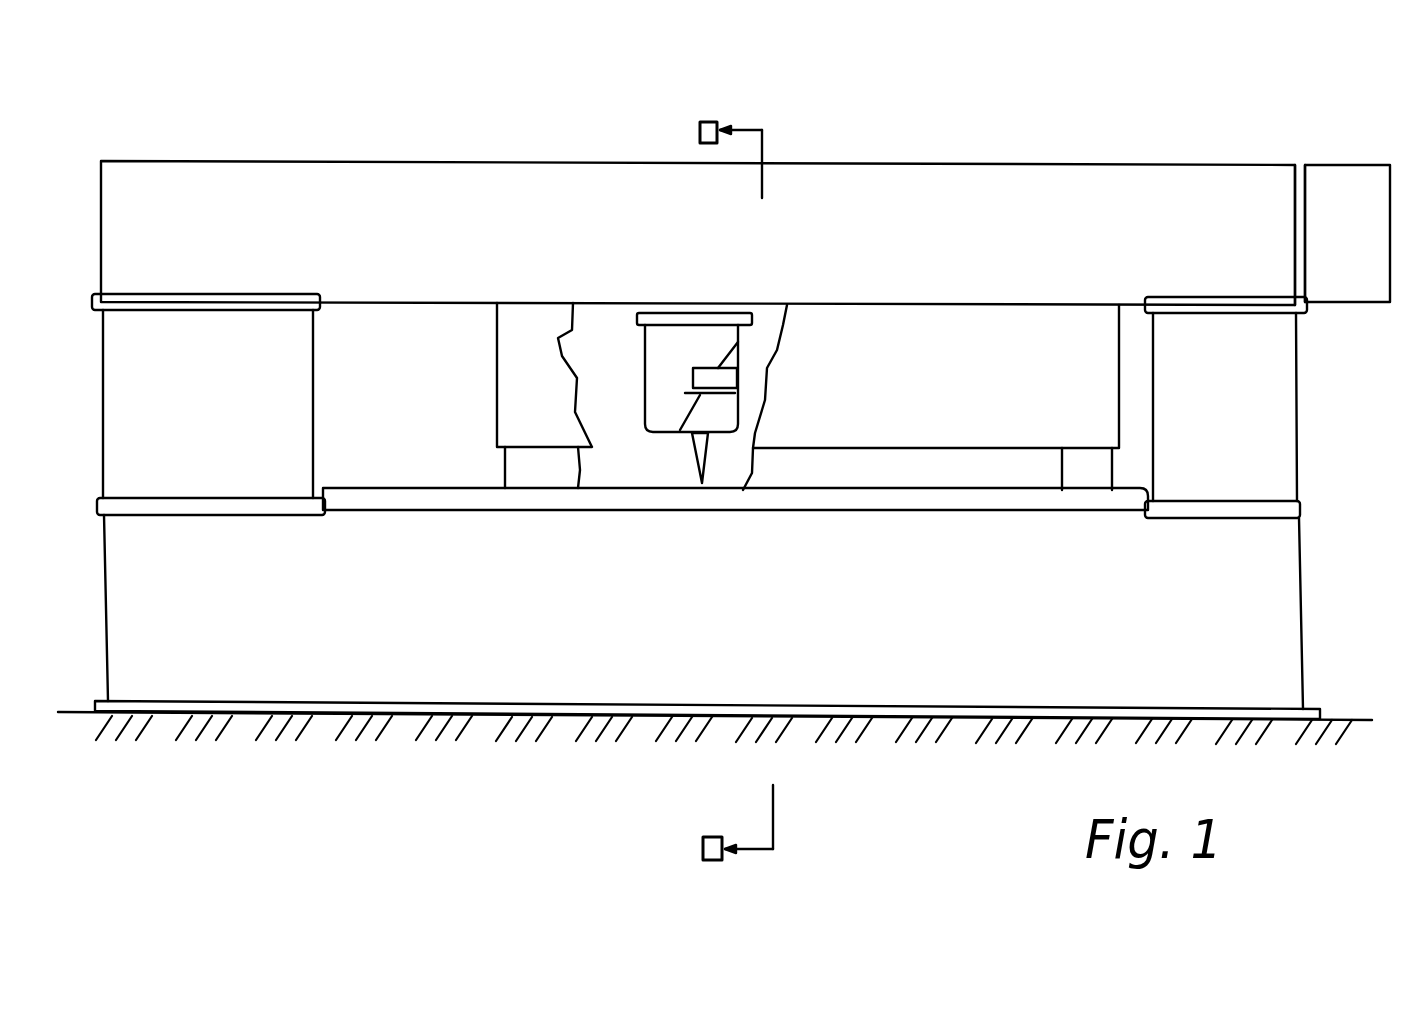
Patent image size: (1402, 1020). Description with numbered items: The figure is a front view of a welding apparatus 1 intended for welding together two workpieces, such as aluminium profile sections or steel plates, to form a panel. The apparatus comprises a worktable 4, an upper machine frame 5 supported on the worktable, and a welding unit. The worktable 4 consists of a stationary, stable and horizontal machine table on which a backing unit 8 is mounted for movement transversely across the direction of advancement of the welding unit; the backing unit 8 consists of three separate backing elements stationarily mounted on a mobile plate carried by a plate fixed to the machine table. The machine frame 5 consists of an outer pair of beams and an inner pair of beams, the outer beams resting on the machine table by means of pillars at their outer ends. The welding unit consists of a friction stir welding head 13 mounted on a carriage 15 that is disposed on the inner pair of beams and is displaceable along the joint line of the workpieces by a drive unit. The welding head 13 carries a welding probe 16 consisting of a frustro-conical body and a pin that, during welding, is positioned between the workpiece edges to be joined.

The welding apparatus 1 is at (745, 172).
The worktable 4 is at (138, 622).
The upper machine frame 5 is at (247, 195).
The backing unit 8 is at (1070, 503).
The friction stir welding head 13 is at (726, 413).
The carriage 15 is at (723, 303).
The welding probe 16 is at (675, 515).